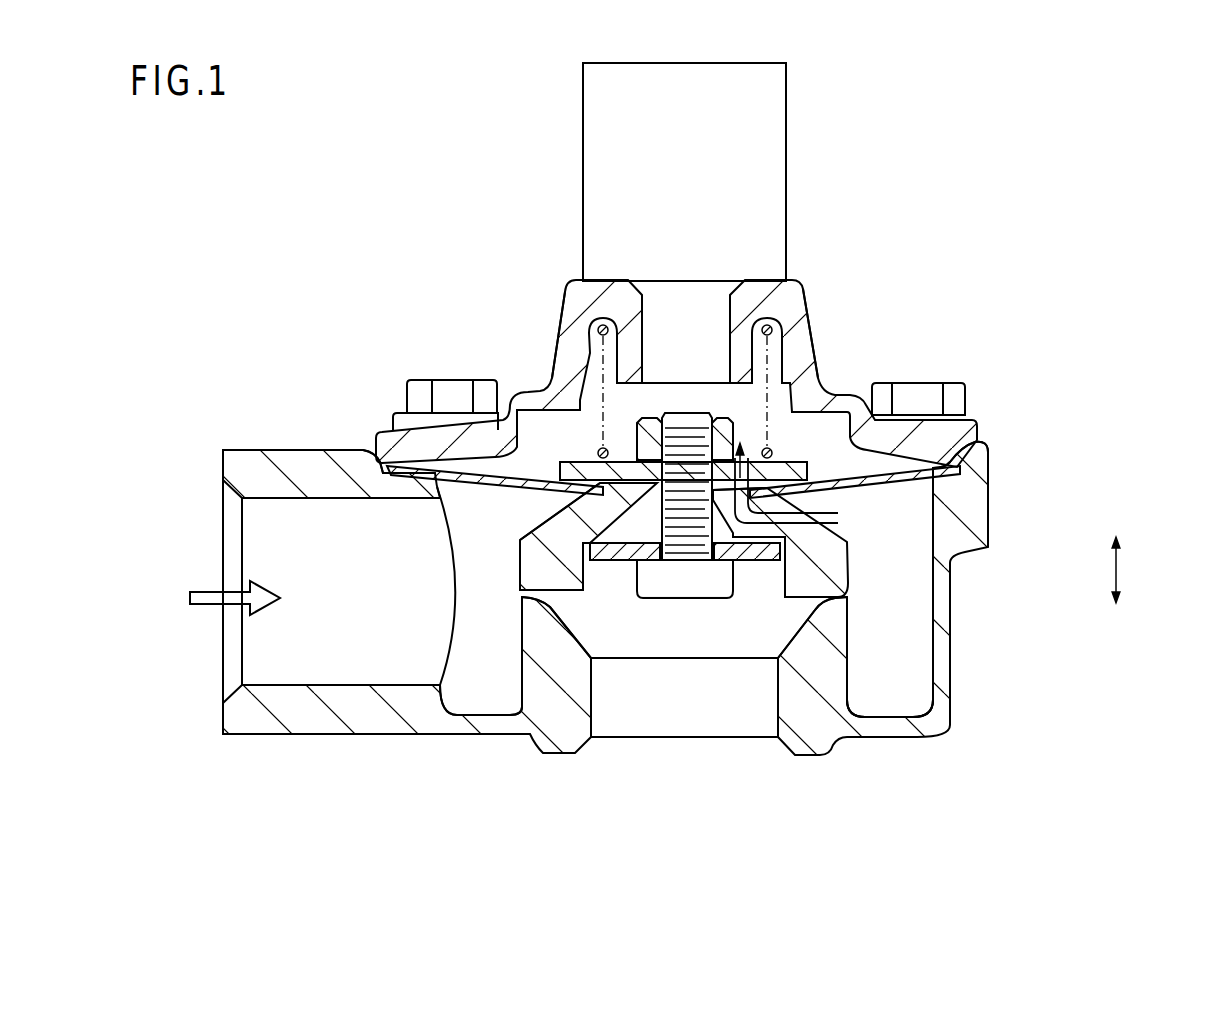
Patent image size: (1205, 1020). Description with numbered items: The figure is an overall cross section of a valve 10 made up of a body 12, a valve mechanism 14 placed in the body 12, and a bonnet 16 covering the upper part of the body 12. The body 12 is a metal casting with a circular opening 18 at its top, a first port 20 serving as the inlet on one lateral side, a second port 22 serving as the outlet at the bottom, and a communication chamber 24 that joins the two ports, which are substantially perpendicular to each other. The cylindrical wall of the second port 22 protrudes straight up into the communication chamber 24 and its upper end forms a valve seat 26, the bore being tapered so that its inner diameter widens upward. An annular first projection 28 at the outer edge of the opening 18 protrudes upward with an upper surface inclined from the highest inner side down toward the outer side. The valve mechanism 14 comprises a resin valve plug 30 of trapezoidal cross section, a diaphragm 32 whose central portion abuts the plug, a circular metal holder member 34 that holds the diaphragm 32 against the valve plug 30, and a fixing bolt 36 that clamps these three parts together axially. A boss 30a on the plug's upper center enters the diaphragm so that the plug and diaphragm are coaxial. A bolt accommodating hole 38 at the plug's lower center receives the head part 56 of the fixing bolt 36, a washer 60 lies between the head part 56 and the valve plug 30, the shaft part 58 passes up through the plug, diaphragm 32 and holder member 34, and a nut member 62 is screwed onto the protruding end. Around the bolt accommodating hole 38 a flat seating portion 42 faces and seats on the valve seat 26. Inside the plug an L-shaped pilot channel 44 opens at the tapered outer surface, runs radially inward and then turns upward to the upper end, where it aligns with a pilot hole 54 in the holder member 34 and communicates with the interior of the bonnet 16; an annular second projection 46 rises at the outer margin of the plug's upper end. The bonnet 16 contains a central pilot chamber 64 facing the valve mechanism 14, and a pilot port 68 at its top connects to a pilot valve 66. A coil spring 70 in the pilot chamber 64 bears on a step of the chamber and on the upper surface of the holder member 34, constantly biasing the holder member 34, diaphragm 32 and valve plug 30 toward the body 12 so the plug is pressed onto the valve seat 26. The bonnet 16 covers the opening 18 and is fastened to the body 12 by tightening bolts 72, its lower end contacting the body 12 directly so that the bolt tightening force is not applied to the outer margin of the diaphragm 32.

The valve 10 is at (420, 128).
The body 12 is at (527, 747).
The valve mechanism 14 is at (866, 560).
The bonnet 16 is at (815, 289).
The opening 18 is at (454, 515).
The first port 20 is at (263, 652).
The second port 22 is at (681, 725).
The communication chamber 24 is at (903, 662).
The valve seat 26 is at (540, 601).
The first projection 28 is at (965, 452).
The valve plug 30 is at (532, 536).
The boss 30a is at (641, 474).
The diaphragm 32 is at (843, 477).
The holder member 34 is at (587, 461).
The fixing bolt 36 is at (713, 601).
The bolt accommodating hole 38 is at (586, 604).
The seating portion 42 is at (797, 600).
The pilot channel 44 is at (806, 511).
The second projection 46 is at (575, 507).
The pilot hole 54 is at (750, 462).
The head part 56 is at (683, 580).
The shaft part 58 is at (691, 430).
The washer 60 is at (630, 552).
The nut member 62 is at (650, 418).
The pilot chamber 64 is at (582, 366).
The pilot valve 66 is at (799, 126).
The pilot port 68 is at (681, 308).
The spring 70 is at (603, 326).
The tightening bolts 72 is at (449, 388).